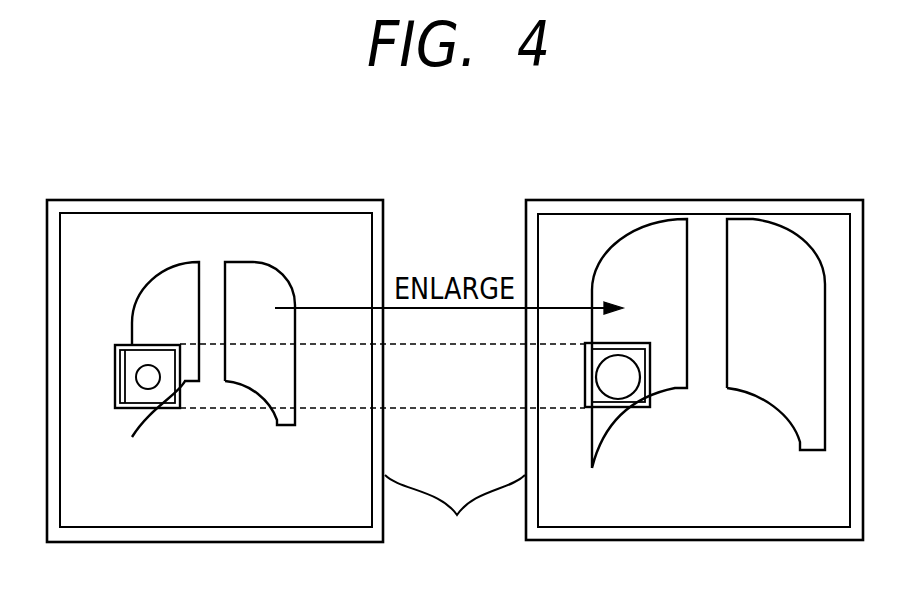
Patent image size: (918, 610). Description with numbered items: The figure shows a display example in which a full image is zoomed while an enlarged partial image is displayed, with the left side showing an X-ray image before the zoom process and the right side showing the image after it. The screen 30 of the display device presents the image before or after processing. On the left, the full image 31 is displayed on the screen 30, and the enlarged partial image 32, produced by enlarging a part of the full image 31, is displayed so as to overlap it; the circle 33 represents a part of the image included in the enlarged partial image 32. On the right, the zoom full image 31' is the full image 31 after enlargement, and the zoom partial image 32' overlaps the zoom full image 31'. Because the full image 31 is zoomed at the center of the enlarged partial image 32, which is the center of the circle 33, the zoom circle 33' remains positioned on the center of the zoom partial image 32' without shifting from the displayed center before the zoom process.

The screen 30 is at (455, 511).
The full image 31 is at (215, 336).
The enlarged partial image 32 is at (163, 292).
The circle 33 is at (149, 412).
The zoom full image 31' is at (694, 335).
The zoom partial image 32' is at (639, 308).
The zoom circle 33' is at (624, 419).